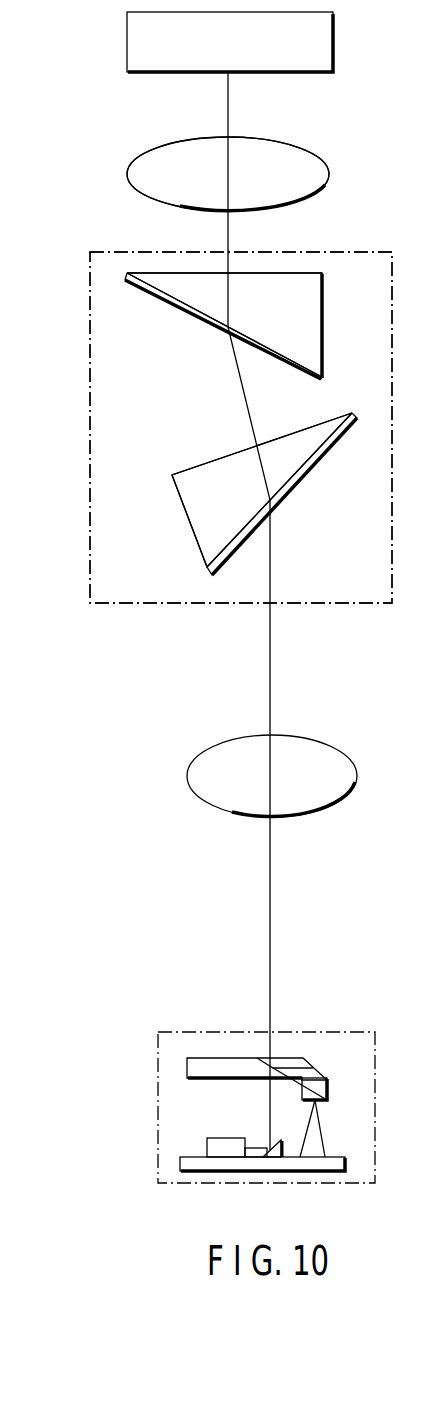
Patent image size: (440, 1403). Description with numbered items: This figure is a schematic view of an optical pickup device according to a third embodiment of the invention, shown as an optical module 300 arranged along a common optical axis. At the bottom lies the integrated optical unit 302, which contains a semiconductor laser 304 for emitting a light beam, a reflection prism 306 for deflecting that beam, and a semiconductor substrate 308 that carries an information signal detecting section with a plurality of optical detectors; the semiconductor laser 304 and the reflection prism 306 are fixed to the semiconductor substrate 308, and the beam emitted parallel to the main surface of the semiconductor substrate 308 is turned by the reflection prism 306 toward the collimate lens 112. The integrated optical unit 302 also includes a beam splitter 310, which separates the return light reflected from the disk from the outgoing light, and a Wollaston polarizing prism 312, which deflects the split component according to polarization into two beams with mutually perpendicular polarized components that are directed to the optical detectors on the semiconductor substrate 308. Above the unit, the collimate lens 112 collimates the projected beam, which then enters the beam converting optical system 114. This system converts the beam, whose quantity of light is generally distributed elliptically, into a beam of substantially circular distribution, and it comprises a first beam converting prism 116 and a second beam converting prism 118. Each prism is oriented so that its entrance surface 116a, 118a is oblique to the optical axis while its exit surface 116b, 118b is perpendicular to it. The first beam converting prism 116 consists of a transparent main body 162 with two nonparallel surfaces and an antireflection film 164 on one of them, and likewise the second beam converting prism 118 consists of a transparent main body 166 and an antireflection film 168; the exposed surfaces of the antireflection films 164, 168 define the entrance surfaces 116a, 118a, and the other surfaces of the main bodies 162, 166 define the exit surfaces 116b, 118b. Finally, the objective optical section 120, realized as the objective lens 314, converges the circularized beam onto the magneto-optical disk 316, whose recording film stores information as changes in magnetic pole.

The magneto-optical disk 316 is at (333, 44).
The objective lens 314 is at (128, 160).
The objective optical section 120 is at (342, 154).
The optical module 300 is at (66, 251).
The beam converting optical system 114 is at (88, 423).
The second beam converting prism 118 is at (254, 313).
The entrance surface 118a is at (157, 296).
The exit surface 118b is at (301, 272).
The transparent main body 166 is at (308, 350).
The antireflection film 168 is at (296, 363).
The first beam converting prism 116 is at (243, 505).
The entrance surface 116a is at (305, 476).
The exit surface 116b is at (180, 470).
The transparent main body 162 is at (188, 504).
The antireflection film 164 is at (237, 538).
The collimate lens 112 is at (187, 776).
The integrated optical unit 302 is at (158, 1080).
The beam splitter 310 is at (213, 1057).
The Wollaston polarizing prism 312 is at (330, 1086).
The semiconductor laser 304 is at (220, 1138).
The reflection prism 306 is at (283, 1157).
The semiconductor substrate 308 is at (347, 1163).